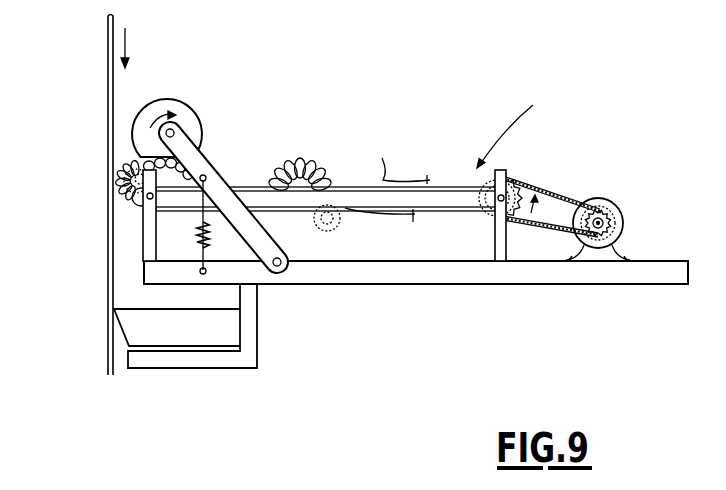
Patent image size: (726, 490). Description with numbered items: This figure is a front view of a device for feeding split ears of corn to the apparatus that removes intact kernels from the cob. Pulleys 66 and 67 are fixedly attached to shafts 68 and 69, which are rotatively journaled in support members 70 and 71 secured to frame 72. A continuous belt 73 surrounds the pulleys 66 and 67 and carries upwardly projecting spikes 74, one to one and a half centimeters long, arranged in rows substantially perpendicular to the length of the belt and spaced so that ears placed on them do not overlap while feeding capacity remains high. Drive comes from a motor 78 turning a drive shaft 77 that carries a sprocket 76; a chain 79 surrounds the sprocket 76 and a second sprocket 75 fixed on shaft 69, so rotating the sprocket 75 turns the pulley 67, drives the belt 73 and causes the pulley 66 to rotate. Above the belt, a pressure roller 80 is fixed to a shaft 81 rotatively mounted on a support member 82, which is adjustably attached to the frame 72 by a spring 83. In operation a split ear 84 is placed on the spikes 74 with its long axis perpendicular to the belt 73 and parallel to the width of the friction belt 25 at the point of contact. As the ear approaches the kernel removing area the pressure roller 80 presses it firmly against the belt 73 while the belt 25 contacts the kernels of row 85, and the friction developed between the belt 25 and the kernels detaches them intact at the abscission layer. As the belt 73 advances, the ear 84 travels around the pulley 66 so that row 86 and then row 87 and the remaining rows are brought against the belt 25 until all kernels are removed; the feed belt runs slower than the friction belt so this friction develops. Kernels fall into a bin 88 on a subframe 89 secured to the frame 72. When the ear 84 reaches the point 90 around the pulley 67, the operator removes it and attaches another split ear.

The friction belt 25 is at (108, 80).
The pulley 66 is at (138, 194).
The pulley 67 is at (483, 209).
The shaft 68 is at (150, 200).
The shaft 69 is at (505, 171).
The support member 70 is at (148, 243).
The support member 71 is at (501, 250).
The frame 72 is at (435, 275).
The continuous belt 73 is at (457, 187).
The spikes 74 is at (343, 208).
The sprocket 75 is at (515, 180).
The sprocket 76 is at (621, 224).
The drive shaft 77 is at (605, 222).
The motor 78 is at (606, 250).
The chain 79 is at (560, 198).
The pressure roller 80 is at (173, 103).
The shaft 81 is at (178, 132).
The support member 82 is at (207, 158).
The spring 83 is at (199, 243).
The ear 84 is at (116, 188).
The row 85 is at (118, 182).
The row 86 is at (120, 165).
The row 87 is at (132, 158).
The bin 88 is at (187, 337).
The subframe 89 is at (257, 352).
The point 90 is at (518, 126).